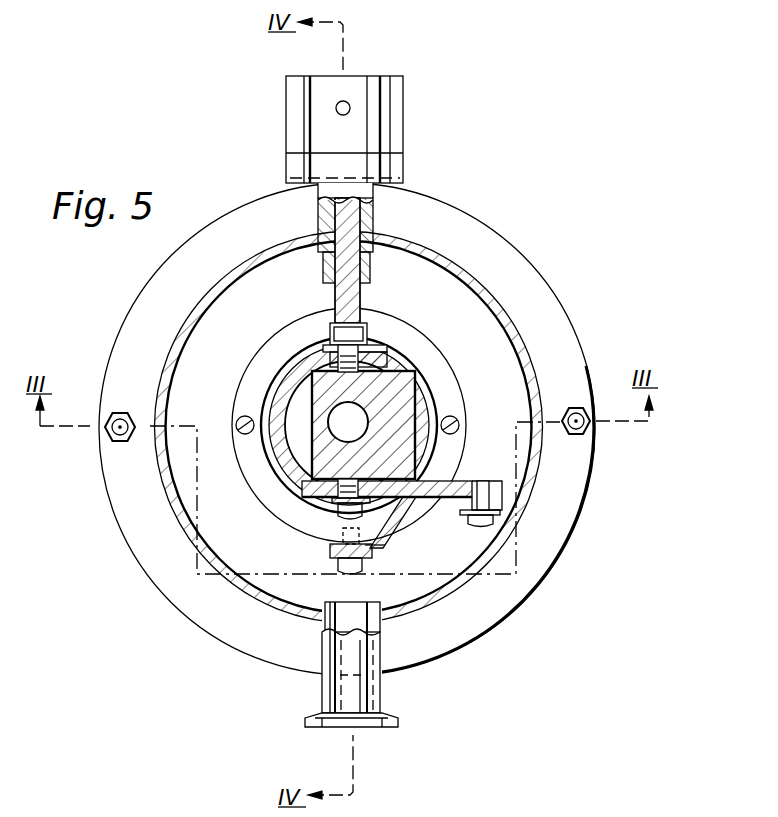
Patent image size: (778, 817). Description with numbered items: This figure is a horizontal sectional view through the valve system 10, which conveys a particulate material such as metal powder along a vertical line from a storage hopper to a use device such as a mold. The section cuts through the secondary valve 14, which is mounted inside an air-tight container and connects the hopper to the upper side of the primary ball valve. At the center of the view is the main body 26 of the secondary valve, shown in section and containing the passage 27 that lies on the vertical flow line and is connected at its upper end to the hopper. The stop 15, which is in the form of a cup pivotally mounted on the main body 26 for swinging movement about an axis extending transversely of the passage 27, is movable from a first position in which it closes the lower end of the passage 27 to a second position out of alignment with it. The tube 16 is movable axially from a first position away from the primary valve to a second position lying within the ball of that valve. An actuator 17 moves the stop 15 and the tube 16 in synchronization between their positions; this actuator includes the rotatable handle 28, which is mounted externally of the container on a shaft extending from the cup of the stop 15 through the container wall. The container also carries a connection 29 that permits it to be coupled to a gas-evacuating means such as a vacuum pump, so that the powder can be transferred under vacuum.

The valve system 10 is at (347, 412).
The secondary valve 14 is at (416, 386).
The stop 15 is at (322, 425).
The tube 16 is at (395, 333).
The actuator 17 is at (404, 122).
The main body 26 is at (400, 413).
The passage 27 is at (362, 433).
The handle 28 is at (293, 131).
The connection 29 is at (378, 697).